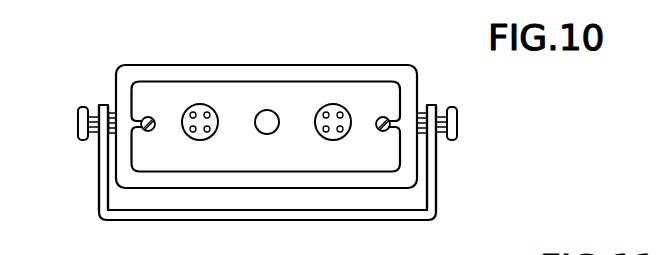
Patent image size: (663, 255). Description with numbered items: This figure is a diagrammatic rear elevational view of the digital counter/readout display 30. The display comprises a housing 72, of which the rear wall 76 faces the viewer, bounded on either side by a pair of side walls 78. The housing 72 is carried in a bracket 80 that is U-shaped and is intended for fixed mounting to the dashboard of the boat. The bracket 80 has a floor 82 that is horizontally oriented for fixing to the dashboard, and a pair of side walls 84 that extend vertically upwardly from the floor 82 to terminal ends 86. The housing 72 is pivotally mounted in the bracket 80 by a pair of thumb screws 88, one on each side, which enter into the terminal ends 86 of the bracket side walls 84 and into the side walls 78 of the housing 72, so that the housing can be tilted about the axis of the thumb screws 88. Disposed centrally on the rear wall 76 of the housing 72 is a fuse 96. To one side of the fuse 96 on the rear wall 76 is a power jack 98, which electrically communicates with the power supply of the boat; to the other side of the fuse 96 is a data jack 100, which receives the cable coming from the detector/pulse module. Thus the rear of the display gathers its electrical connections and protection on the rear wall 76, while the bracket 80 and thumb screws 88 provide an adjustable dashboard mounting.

The digital counter/readout display 30 is at (273, 134).
The housing 72 is at (203, 64).
The rear wall 76 is at (390, 153).
The side walls 78 is at (115, 80).
The bracket 80 is at (194, 221).
The floor 82 is at (339, 222).
The side walls 84 is at (99, 168).
The terminal ends 86 is at (103, 105).
The thumb screws 88 is at (78, 124).
The fuse 96 is at (270, 134).
The power jack 98 is at (201, 105).
The data jack 100 is at (336, 105).